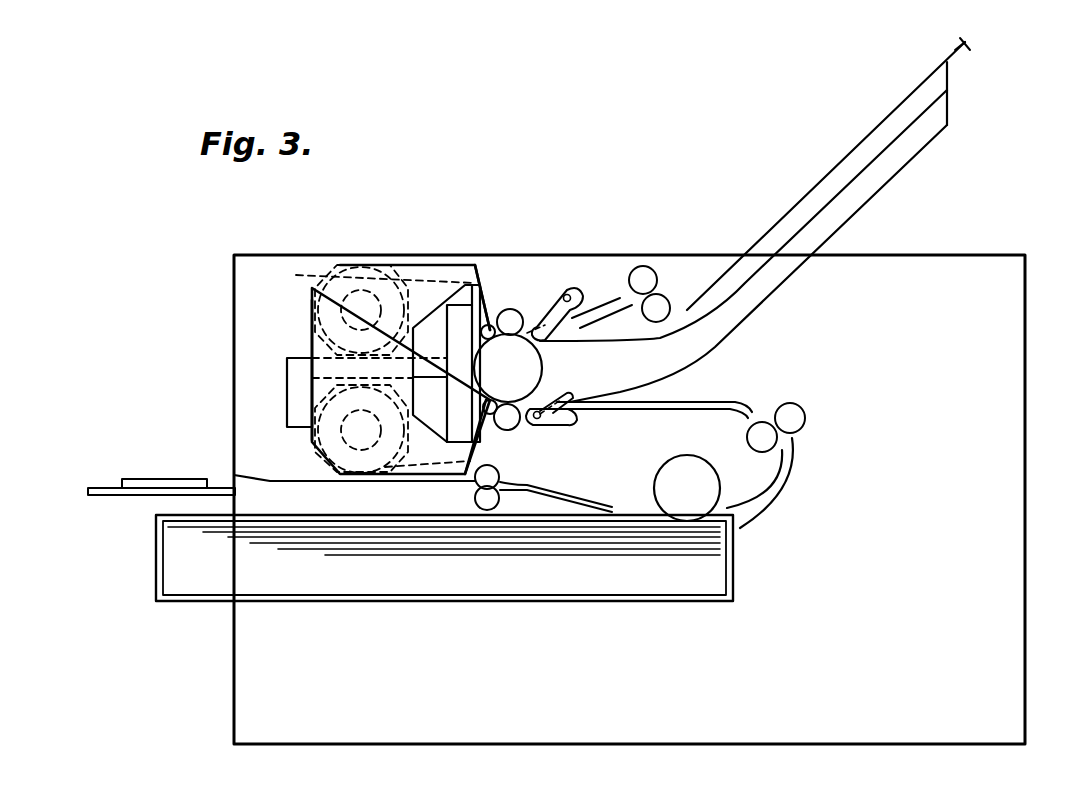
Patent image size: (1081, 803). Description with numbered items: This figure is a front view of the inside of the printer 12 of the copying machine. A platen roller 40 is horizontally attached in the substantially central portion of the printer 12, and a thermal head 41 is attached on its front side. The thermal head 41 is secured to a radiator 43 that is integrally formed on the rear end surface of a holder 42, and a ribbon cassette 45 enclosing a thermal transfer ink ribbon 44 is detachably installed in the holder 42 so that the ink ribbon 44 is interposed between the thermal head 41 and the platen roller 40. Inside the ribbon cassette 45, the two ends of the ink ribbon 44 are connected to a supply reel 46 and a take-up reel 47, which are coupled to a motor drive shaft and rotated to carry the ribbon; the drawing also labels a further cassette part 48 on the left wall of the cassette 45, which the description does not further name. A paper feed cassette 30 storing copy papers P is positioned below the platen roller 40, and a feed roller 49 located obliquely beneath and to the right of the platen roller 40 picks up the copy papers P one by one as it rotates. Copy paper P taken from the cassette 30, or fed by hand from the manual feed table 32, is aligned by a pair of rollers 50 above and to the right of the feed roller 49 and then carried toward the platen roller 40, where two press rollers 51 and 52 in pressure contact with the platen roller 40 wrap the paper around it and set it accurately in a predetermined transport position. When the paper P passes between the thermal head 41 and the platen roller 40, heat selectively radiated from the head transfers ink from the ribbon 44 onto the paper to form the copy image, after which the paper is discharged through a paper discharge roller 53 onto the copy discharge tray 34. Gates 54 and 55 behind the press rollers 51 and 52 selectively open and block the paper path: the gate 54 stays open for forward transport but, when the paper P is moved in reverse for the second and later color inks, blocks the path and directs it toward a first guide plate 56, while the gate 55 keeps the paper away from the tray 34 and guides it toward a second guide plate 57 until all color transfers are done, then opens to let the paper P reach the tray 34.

The printer 12 is at (1002, 305).
The paper feed cassette 30 is at (735, 570).
The manual feed table 32 is at (152, 479).
The copy discharge tray 34 is at (963, 47).
The platen roller 40 is at (530, 372).
The thermal head 41 is at (475, 283).
The holder 42 is at (290, 368).
The radiator 43 is at (462, 315).
The thermal transfer ink ribbon 44 is at (492, 326).
The ribbon cassette 45 is at (371, 259).
The supply reel 46 is at (371, 309).
The take-up reel 47 is at (323, 447).
The hopper wall 48 is at (312, 324).
The feed roller 49 is at (683, 470).
The pair of rollers 50 is at (793, 413).
The press roller 51 is at (504, 420).
The press roller 52 is at (512, 320).
The paper discharge roller 53 is at (643, 275).
The gate 54 is at (573, 425).
The gate 55 is at (556, 328).
The first guide plate 56 is at (897, 173).
The second guide plate 57 is at (840, 163).
The copy paper P is at (555, 560).